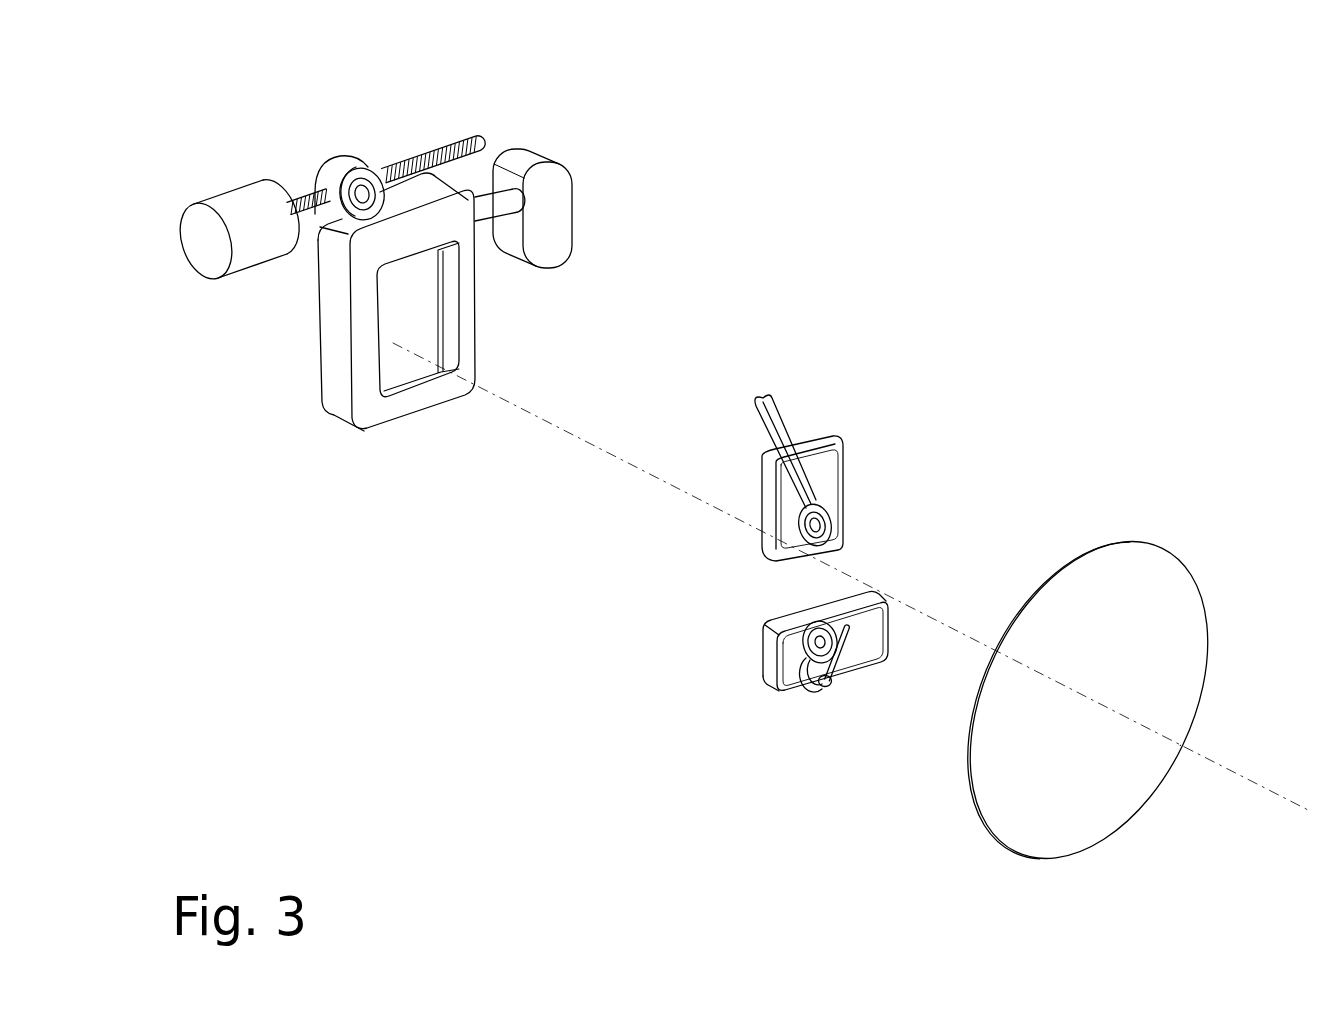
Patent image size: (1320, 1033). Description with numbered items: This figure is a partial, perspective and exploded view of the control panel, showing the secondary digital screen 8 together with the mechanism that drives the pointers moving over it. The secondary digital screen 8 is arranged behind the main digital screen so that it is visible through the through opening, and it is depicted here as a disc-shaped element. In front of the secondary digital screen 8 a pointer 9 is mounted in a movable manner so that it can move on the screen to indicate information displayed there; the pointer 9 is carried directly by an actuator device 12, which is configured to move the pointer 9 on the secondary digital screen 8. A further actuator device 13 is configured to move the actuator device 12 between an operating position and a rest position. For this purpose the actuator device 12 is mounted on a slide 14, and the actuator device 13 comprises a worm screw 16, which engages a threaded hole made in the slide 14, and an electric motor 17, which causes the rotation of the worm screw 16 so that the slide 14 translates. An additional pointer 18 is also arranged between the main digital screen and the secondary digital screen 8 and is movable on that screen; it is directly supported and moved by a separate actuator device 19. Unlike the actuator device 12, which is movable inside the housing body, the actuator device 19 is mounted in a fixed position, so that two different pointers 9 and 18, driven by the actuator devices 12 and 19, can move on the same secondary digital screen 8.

The secondary digital screen 8 is at (1108, 596).
The pointer 9 is at (757, 407).
The actuator device 12 is at (816, 470).
The actuator device 13 is at (374, 121).
The slide 14 is at (333, 367).
The worm screw 16 is at (433, 150).
The electric motor 17 is at (240, 212).
The additional pointer 18 is at (843, 648).
The actuator device 19 is at (862, 633).